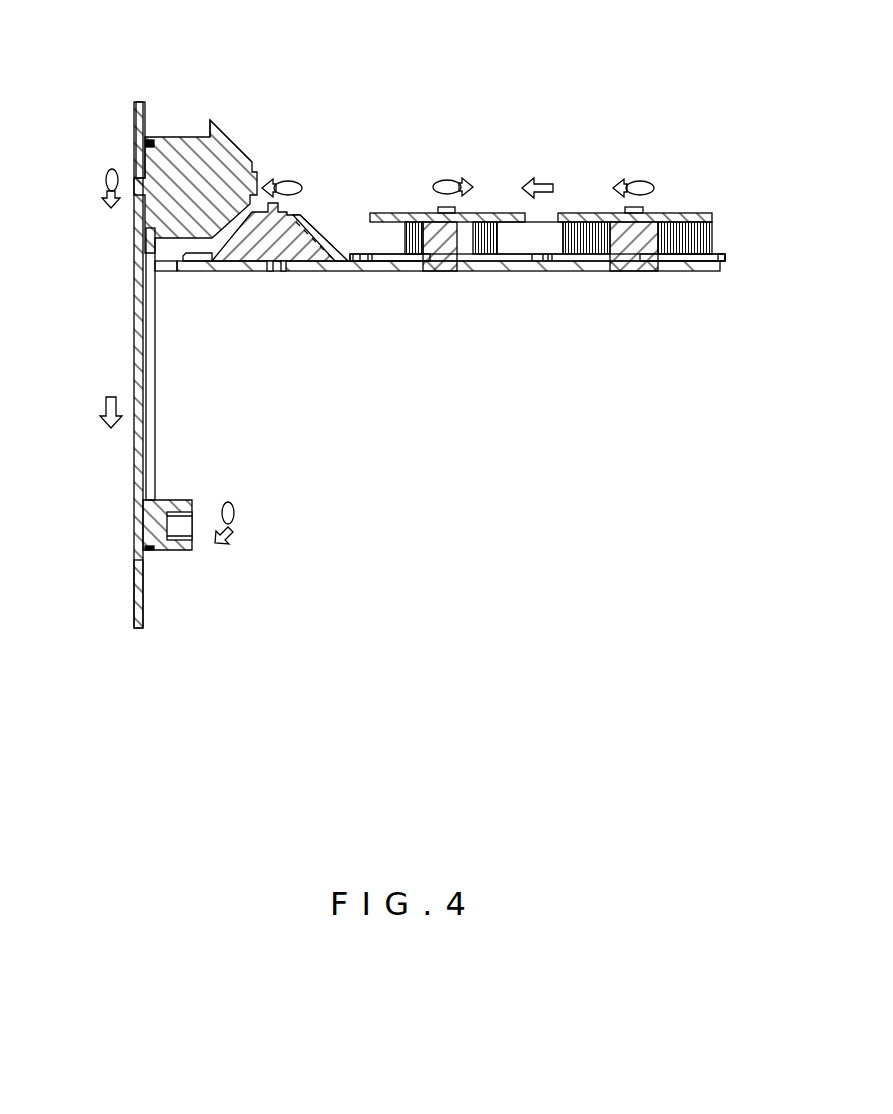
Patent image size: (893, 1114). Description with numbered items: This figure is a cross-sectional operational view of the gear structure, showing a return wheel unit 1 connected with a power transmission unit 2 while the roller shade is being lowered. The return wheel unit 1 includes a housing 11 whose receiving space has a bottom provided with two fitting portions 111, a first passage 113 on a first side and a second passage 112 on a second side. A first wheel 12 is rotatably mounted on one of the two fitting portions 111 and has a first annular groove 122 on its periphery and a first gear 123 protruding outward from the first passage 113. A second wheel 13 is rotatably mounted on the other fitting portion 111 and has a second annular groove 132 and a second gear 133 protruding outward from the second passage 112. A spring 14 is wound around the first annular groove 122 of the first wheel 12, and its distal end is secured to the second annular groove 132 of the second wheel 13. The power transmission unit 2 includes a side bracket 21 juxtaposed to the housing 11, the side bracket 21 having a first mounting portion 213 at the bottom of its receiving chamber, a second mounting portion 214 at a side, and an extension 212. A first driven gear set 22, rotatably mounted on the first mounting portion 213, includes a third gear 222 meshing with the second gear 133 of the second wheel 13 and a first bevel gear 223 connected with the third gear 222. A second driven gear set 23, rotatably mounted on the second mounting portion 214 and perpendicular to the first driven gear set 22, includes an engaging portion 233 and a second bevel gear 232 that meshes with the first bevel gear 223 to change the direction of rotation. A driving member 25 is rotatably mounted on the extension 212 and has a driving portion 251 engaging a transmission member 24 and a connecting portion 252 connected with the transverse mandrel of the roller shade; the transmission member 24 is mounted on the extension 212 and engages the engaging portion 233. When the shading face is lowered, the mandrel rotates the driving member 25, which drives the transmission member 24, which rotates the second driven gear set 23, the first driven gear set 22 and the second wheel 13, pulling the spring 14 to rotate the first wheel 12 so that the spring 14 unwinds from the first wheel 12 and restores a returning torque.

The return wheel unit 1 is at (470, 95).
The housing 11 is at (497, 272).
The fitting portions 111 is at (645, 272).
The second passage 112 is at (374, 258).
The first passage 113 is at (713, 272).
The first wheel 12 is at (695, 222).
The first annular groove 122 is at (612, 268).
The first gear 123 is at (578, 268).
The second wheel 13 is at (500, 222).
The second annular groove 132 is at (493, 258).
The second gear 133 is at (420, 257).
The spring 14 is at (550, 236).
The power transmission unit 2 is at (291, 62).
The side bracket 21 is at (138, 103).
The extension 212 is at (147, 557).
The first mounting portion 213 is at (282, 262).
The second mounting portion 214 is at (140, 150).
The first driven gear set 22 is at (296, 212).
The third gear 222 is at (203, 258).
The first bevel gear 223 is at (305, 212).
The second driven gear set 23 is at (180, 137).
The second bevel gear 232 is at (236, 126).
The engaging portion 233 is at (148, 139).
The transmission member 24 is at (153, 477).
The driving member 25 is at (207, 545).
The driving portion 251 is at (150, 551).
The connecting portion 252 is at (225, 535).